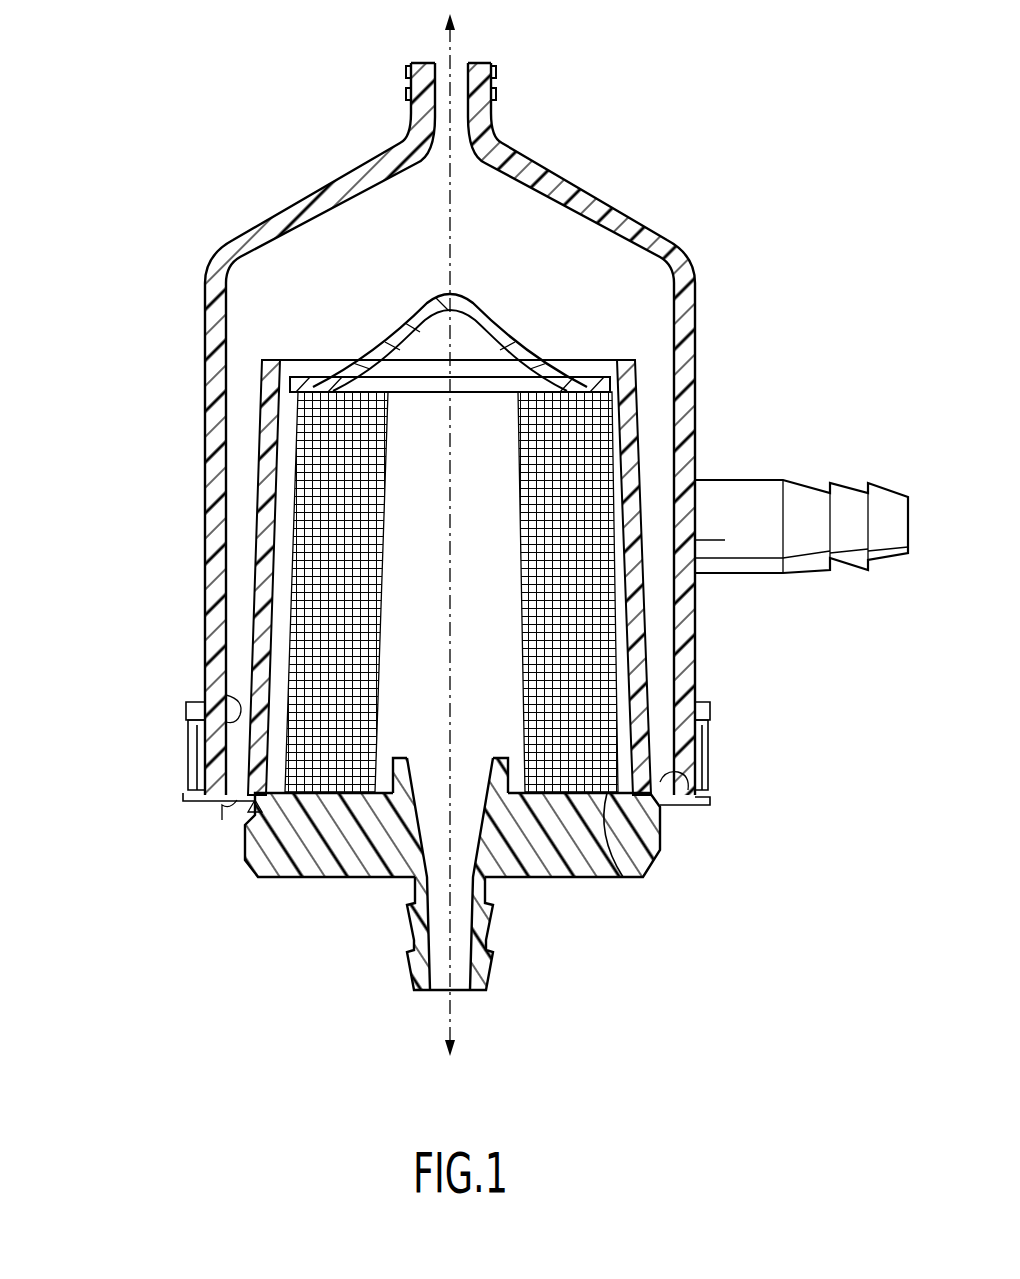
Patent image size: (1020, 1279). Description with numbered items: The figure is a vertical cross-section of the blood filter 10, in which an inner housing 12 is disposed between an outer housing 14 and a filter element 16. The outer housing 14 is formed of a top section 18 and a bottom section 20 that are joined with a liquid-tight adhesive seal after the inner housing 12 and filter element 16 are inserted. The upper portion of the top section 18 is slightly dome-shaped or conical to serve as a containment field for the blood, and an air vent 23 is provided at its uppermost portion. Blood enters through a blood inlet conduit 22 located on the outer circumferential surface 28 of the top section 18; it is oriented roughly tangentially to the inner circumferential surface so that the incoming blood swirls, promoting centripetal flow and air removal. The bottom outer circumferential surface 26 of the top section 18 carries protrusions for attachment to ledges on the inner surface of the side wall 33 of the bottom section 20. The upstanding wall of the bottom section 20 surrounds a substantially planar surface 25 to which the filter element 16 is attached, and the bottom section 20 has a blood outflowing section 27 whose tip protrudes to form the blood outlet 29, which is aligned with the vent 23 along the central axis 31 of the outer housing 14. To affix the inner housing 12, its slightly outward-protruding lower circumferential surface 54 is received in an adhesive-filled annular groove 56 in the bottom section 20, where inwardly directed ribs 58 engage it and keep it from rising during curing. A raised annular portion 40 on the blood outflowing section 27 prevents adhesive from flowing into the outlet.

The blood filter 10 is at (230, 212).
The inner housing 12 is at (638, 421).
The outer housing 14 is at (180, 632).
The filter element 16 is at (615, 621).
The top section 18 is at (205, 580).
The bottom section 20 is at (205, 805).
The blood inlet conduit 22 is at (745, 478).
The air vent 23 is at (468, 62).
The surface 25 is at (624, 877).
The bottom outer circumferential surface 26 is at (203, 772).
The blood outflowing section 27 is at (458, 758).
The outer circumferential surface 28 is at (183, 712).
The blood outlet 29 is at (490, 940).
The central axis 31 is at (457, 247).
The side wall 33 is at (212, 690).
The raised annular portion 40 is at (503, 760).
The lower circumferential surface 54 is at (238, 800).
The annular groove 56 is at (257, 805).
The ribs 58 is at (660, 782).